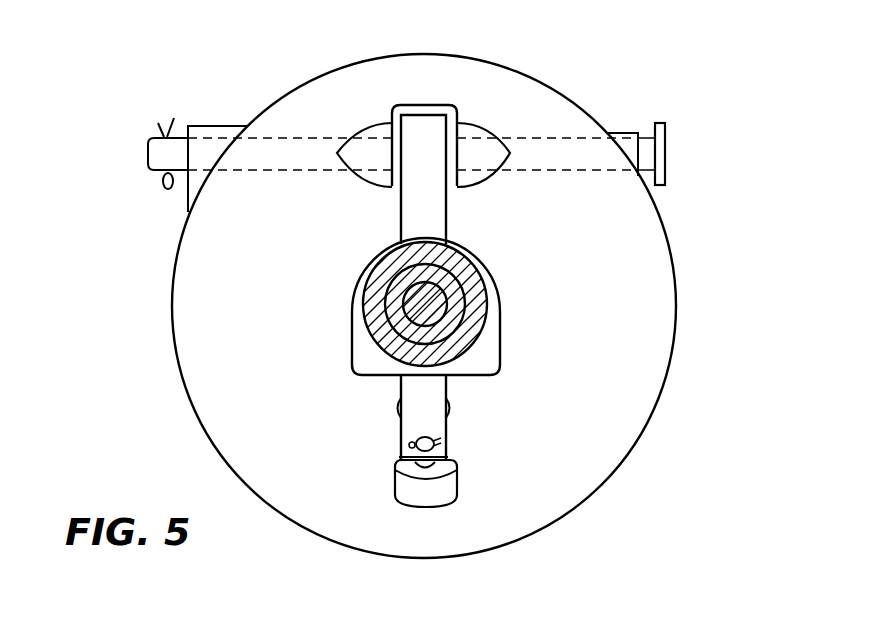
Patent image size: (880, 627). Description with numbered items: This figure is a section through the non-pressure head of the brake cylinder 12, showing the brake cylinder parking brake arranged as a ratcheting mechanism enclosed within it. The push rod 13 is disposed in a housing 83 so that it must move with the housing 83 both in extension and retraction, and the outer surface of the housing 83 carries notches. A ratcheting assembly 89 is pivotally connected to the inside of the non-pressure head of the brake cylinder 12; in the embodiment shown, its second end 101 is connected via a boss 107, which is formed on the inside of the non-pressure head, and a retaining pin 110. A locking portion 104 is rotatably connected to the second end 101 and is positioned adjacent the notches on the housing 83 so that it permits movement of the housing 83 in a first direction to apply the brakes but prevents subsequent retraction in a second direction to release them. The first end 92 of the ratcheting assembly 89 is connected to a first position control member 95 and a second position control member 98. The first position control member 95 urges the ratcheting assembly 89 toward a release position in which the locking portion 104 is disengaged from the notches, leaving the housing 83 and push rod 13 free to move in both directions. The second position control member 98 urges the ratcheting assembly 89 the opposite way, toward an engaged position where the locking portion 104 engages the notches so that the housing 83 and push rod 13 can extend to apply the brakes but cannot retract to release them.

The brake cylinder 12 is at (553, 521).
The push rod 13 is at (407, 303).
The housing 83 is at (477, 342).
The ratcheting assembly 89 is at (498, 308).
The first end 92 is at (447, 452).
The first position control member 95 is at (400, 410).
The second position control member 98 is at (400, 488).
The second end 101 is at (422, 125).
The locking portion 104 is at (443, 244).
The boss 107 is at (467, 130).
The retaining pin 110 is at (665, 157).